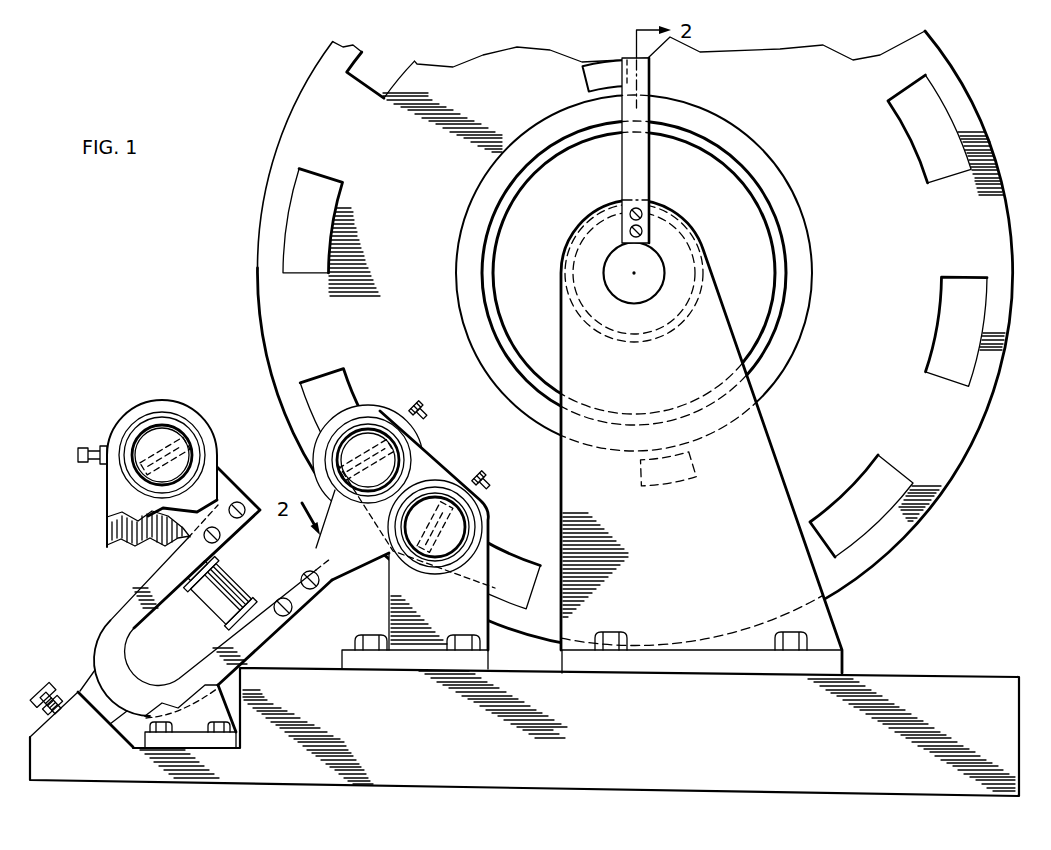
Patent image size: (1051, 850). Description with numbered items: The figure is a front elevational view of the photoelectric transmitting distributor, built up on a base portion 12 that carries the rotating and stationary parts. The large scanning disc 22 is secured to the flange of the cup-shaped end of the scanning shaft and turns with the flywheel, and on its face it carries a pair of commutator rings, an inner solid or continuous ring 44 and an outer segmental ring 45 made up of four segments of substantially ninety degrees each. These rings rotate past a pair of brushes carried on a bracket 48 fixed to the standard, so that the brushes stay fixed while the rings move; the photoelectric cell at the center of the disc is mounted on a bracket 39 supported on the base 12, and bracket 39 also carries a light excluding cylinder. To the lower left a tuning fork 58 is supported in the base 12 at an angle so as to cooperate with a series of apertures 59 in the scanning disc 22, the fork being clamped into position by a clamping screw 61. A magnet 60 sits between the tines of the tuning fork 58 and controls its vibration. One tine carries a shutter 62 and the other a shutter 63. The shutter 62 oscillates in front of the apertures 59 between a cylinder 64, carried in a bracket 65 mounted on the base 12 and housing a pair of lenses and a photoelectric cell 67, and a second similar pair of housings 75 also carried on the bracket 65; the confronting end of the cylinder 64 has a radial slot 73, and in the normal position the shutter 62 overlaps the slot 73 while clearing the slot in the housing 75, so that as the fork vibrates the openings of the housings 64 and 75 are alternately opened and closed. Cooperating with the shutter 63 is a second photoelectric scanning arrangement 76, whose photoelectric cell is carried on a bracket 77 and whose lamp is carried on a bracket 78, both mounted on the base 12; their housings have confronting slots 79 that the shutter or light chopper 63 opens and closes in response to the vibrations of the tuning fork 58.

The base portion 12 is at (928, 686).
The scanning disc 22 is at (298, 108).
The bracket 39 is at (779, 470).
The inner solid ring 44 is at (458, 244).
The outer segmental ring 45 is at (583, 72).
The bracket 48 is at (649, 165).
The tuning fork 58 is at (121, 612).
The apertures 59 is at (300, 270).
The magnet 60 is at (213, 612).
The clamping screw 61 is at (35, 677).
The shutter 62 is at (377, 558).
The shutter 63 is at (229, 486).
The cylinder 64 is at (379, 420).
The bracket 65 is at (389, 628).
The photoelectric cell 67 is at (401, 466).
The slot 73 is at (408, 450).
The housings 75 is at (474, 516).
The photoelectric scanning arrangement 76 is at (176, 413).
The bracket 77 is at (107, 497).
The bracket 78 is at (107, 538).
The confronting slots 79 is at (150, 422).